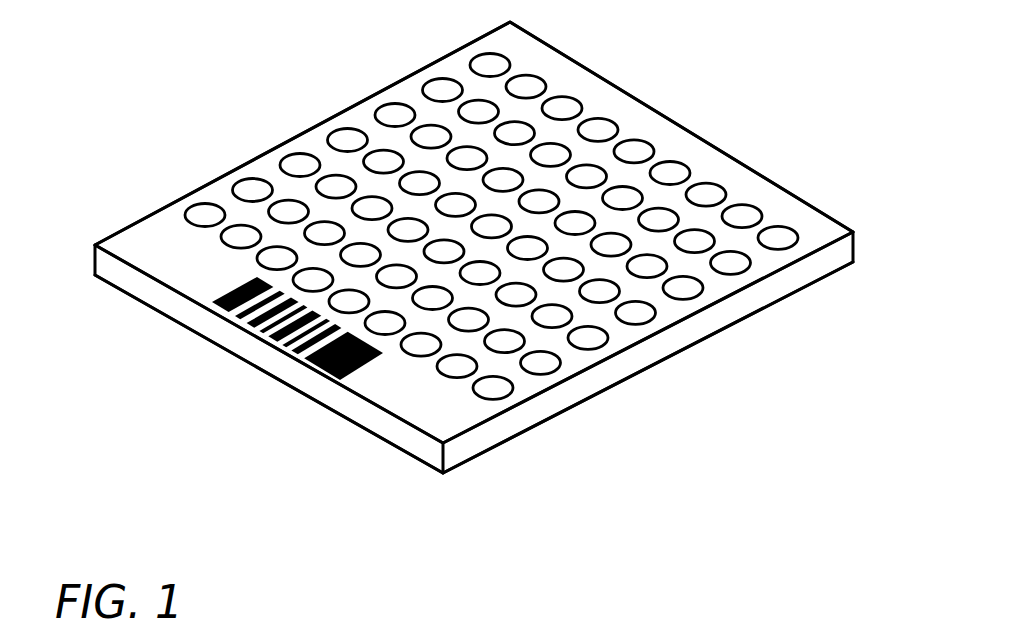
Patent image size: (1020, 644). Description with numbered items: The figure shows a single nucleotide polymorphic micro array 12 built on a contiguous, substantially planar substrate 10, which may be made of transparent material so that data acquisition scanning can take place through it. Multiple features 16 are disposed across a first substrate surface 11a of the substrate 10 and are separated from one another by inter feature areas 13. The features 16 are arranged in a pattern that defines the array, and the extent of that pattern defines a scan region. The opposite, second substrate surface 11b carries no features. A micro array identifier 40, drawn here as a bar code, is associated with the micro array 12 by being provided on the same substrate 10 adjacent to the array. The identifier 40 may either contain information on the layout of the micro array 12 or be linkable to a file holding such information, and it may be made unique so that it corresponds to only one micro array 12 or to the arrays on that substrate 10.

The substrate 10 is at (545, 403).
The first substrate surface 11a is at (790, 215).
The second substrate surface 11b is at (728, 327).
The micro array 12 is at (491, 206).
The inter feature areas 13 is at (276, 130).
The features 16 is at (273, 145).
The micro array identifier 40 is at (272, 337).